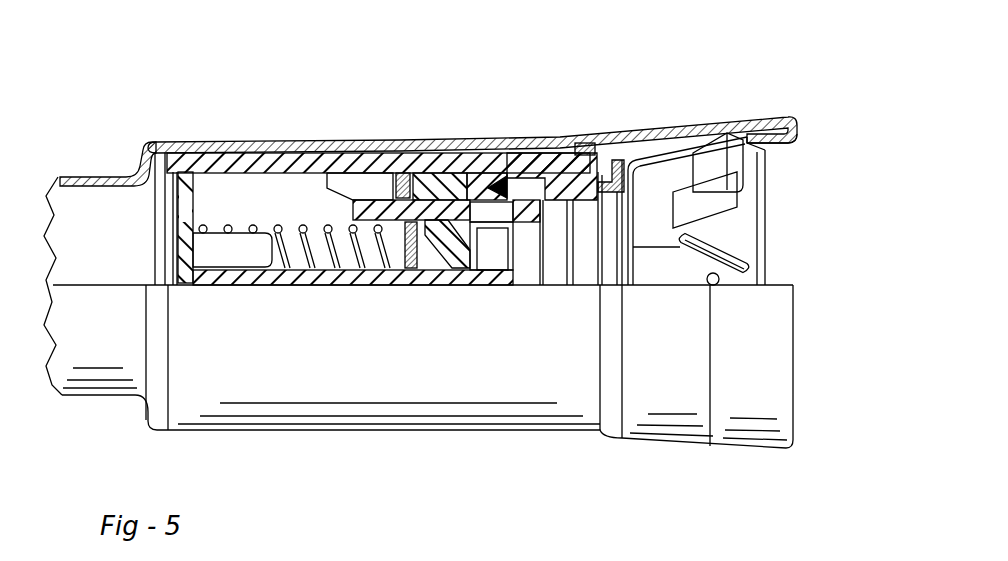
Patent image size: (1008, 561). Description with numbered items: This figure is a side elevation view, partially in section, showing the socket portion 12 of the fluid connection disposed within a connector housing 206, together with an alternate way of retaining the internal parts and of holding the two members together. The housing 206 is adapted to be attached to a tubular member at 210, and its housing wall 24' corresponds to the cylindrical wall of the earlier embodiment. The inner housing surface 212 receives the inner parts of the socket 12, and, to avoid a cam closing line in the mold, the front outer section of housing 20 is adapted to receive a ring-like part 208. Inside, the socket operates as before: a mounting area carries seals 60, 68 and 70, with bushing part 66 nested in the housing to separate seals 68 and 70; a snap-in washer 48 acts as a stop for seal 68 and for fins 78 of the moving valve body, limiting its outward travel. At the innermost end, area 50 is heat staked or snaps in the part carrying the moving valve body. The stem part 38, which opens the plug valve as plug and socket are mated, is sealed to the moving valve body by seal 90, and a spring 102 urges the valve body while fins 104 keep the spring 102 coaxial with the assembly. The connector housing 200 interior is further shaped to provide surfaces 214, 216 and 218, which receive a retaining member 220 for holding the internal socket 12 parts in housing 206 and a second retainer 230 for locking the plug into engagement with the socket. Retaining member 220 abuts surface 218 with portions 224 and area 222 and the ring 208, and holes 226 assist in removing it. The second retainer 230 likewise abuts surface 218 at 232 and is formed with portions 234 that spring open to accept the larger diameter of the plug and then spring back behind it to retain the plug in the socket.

The socket fluid conduit assembly 12 is at (328, 78).
The seal retainer portion 20 is at (509, 198).
The housing wall 24' is at (378, 132).
The stem part 38 is at (317, 272).
The snap-in washer 48 is at (403, 178).
The area 50 is at (158, 214).
The seal 60 is at (582, 175).
The bushing part 66 is at (475, 178).
The seal 68 is at (436, 180).
The seal 70 is at (548, 183).
The fins 78 is at (346, 185).
The seal 90 is at (421, 278).
The spring 102 is at (364, 275).
The fins 104 is at (243, 262).
The connector housing 200 is at (393, 460).
The connector housing 206 is at (238, 393).
The ring-like part 208 is at (588, 148).
The attachment location 210 is at (88, 177).
The inner housing surface 212 is at (257, 168).
The interior surface 214 is at (652, 140).
The interior surface 216 is at (697, 135).
The interior surface 218 is at (768, 165).
The retaining member 220 is at (603, 135).
The area 222 is at (590, 190).
The portions 224 is at (750, 270).
The holes 226 is at (716, 284).
The second retainer 230 is at (744, 130).
The abutment 232 is at (793, 142).
The portions 234 is at (720, 208).